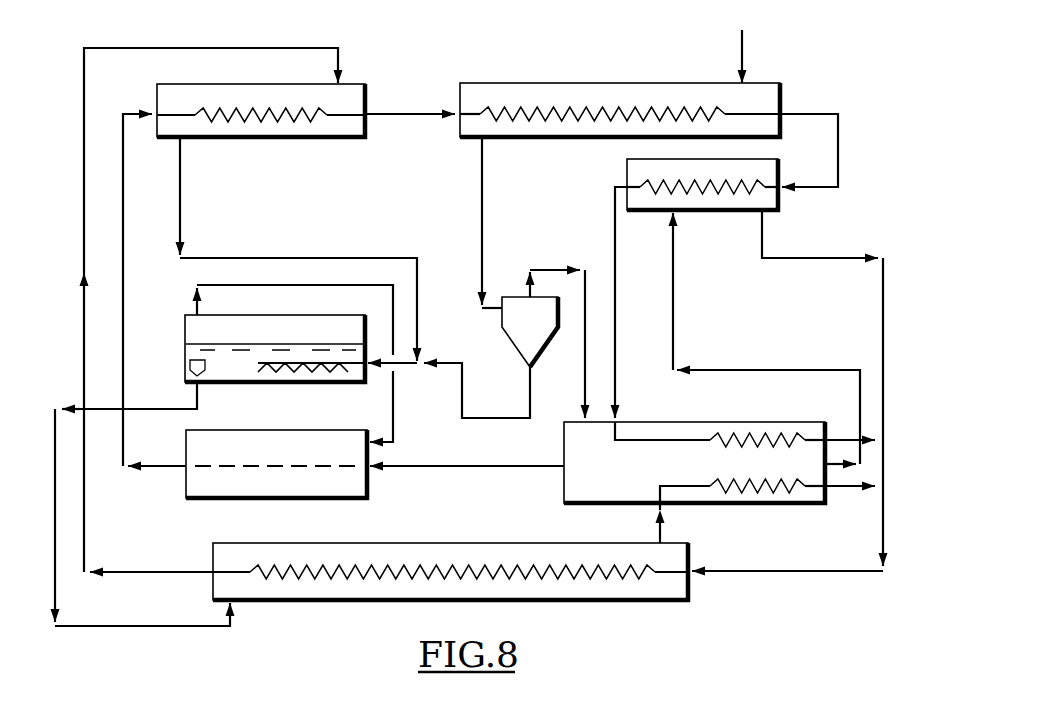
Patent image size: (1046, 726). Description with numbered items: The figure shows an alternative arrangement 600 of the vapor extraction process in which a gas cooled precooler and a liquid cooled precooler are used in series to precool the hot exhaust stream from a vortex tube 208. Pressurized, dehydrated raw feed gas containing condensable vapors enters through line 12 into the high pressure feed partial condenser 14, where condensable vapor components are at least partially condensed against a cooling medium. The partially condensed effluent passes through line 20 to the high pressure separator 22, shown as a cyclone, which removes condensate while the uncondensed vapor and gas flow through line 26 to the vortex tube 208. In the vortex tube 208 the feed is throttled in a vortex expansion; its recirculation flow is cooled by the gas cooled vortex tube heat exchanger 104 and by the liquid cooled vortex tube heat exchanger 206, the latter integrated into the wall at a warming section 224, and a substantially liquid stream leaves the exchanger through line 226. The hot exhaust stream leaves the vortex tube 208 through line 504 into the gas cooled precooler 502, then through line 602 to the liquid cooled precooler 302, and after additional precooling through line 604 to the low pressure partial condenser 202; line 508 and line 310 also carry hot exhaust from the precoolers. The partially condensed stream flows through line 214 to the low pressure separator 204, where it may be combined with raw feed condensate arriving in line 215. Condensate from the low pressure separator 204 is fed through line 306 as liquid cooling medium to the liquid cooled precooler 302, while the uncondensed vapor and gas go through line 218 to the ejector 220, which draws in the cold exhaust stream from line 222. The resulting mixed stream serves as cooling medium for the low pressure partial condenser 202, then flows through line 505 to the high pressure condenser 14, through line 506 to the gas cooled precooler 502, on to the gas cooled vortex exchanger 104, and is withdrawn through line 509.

The alternative arrangement 600 is at (148, 645).
The line 12 is at (742, 50).
The high pressure feed partial condenser 14 is at (540, 83).
The line 20 is at (484, 266).
The high pressure separator 22 is at (512, 293).
The line 26 is at (583, 357).
The gas cooled vortex tube heat exchanger 104 is at (732, 430).
The low pressure partial condenser 202 is at (163, 84).
The low pressure separator 204 is at (277, 315).
The liquid cooled vortex tube heat exchanger 206 is at (758, 490).
The vortex tube 208 is at (647, 503).
The line 214 is at (212, 257).
The line 215 is at (462, 397).
The line 218 is at (280, 282).
The ejector 220 is at (283, 430).
The line 222 is at (500, 467).
The warming section 224 is at (752, 462).
The line 226 is at (840, 487).
The liquid cooled precooler 302 is at (465, 543).
The line 306 is at (57, 485).
The line 310 is at (85, 180).
The gas cooled precooler 502 is at (643, 158).
The line 504 is at (714, 368).
The line 505 is at (418, 118).
The line 506 is at (838, 172).
The line 508 is at (613, 212).
The line 509 is at (850, 428).
The line 602 is at (880, 297).
The line 604 is at (127, 228).